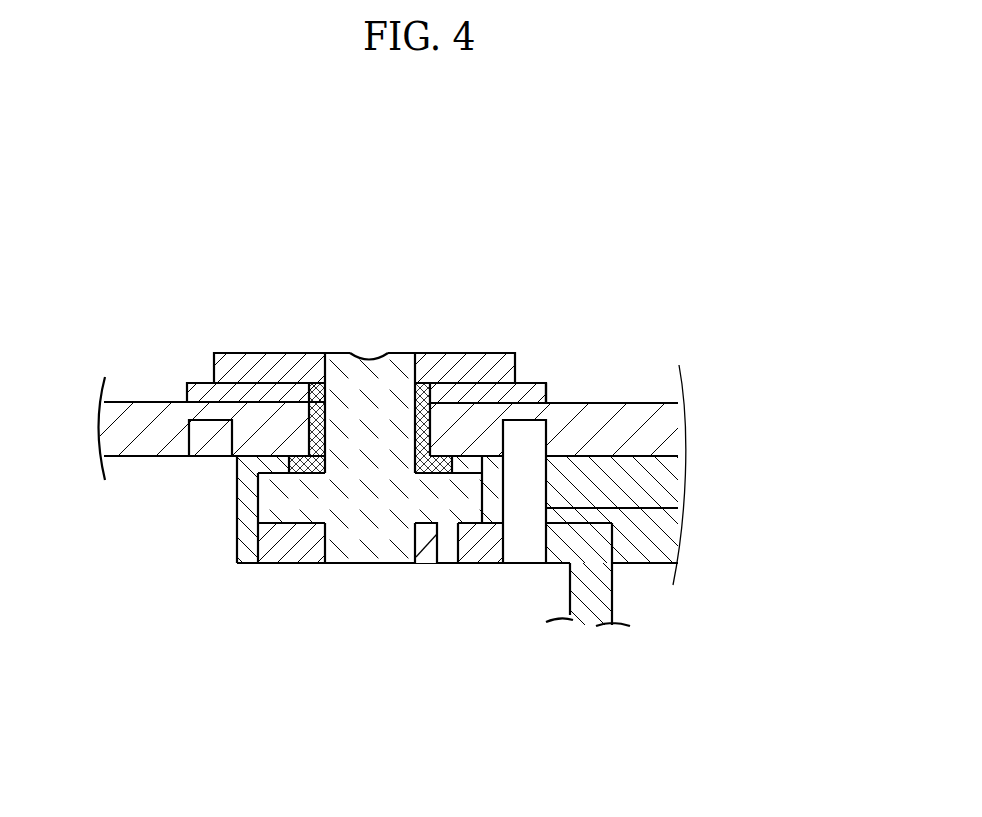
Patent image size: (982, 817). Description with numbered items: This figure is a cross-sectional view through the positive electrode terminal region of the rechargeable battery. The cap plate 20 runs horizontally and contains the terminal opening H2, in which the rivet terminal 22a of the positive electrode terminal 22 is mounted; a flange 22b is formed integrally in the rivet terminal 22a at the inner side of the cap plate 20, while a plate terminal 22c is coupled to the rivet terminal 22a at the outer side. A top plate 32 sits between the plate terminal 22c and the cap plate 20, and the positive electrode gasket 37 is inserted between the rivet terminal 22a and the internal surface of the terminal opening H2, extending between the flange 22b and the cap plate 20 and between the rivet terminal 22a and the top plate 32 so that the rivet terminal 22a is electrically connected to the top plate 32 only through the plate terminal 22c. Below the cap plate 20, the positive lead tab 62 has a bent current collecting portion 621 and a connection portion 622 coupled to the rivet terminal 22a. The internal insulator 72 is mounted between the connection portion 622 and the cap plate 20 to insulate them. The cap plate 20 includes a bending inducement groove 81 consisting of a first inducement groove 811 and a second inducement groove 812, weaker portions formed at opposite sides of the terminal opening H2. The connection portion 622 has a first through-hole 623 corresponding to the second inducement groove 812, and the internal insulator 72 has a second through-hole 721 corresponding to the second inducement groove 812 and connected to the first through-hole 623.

The cap plate 20 is at (133, 414).
The positive electrode terminal 22 is at (426, 290).
The rivet terminal 22a is at (368, 490).
The flange 22b is at (280, 500).
The plate terminal 22c is at (485, 367).
The top plate 32 is at (530, 395).
The positive electrode gasket 37 is at (282, 417).
The terminal opening H2 is at (325, 440).
The positive lead tab 62 is at (543, 711).
The current collecting portion 621 is at (592, 607).
The connection portion 622 is at (430, 553).
The first through-hole 623 is at (508, 545).
The internal insulator 72 is at (643, 488).
The second through-hole 721 is at (570, 509).
The bending inducement groove 81 is at (76, 607).
The first inducement groove 811 is at (210, 421).
The second inducement groove 812 is at (546, 438).